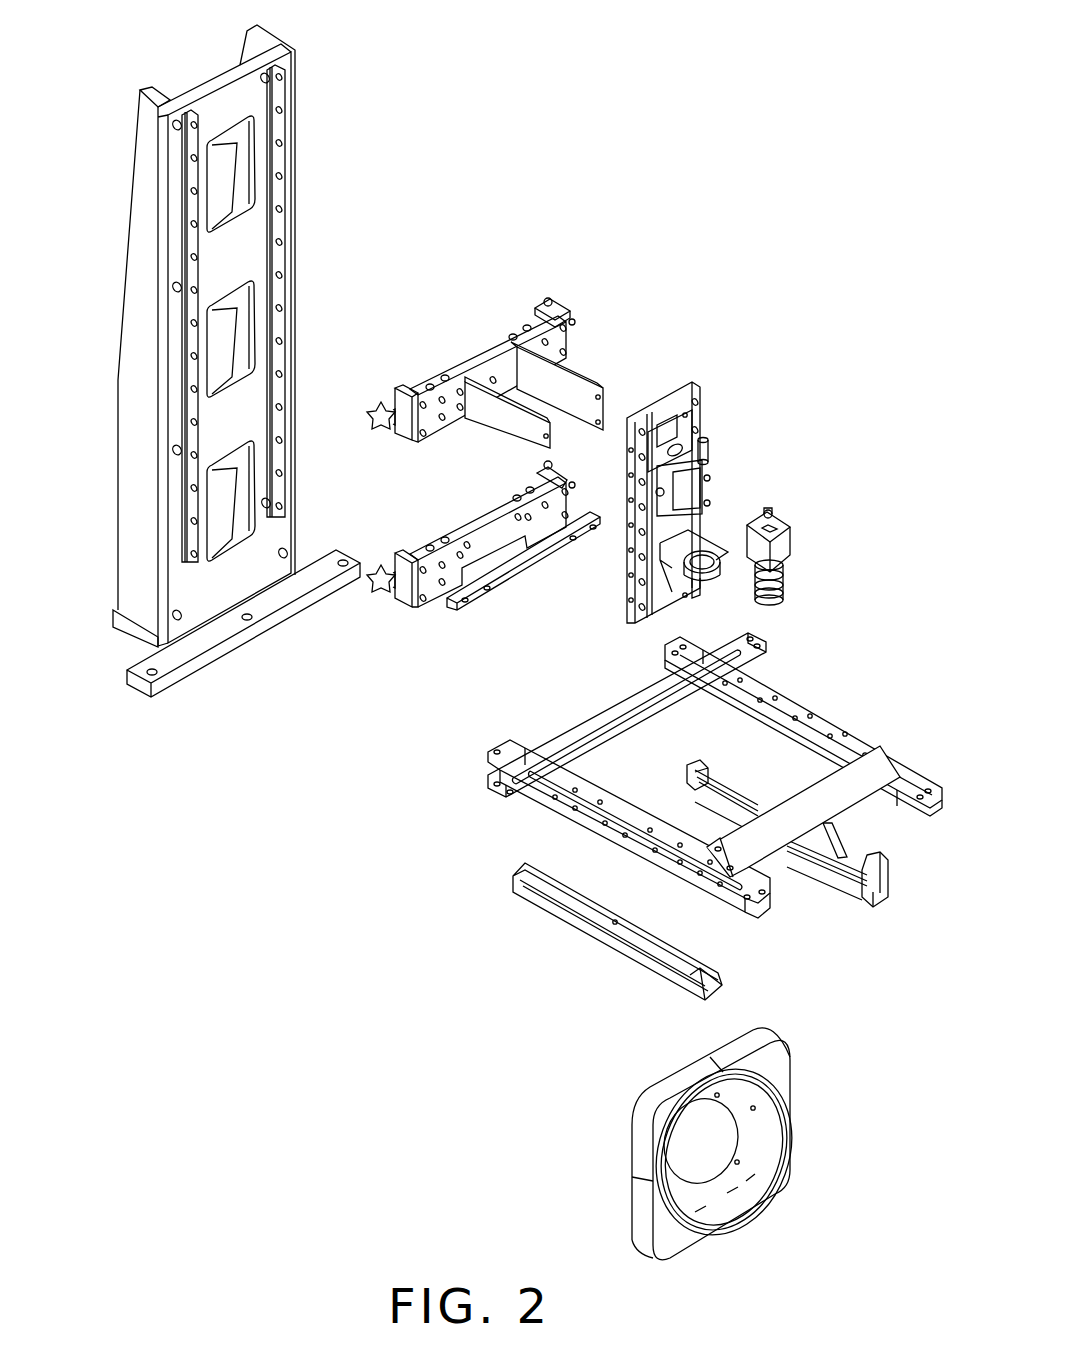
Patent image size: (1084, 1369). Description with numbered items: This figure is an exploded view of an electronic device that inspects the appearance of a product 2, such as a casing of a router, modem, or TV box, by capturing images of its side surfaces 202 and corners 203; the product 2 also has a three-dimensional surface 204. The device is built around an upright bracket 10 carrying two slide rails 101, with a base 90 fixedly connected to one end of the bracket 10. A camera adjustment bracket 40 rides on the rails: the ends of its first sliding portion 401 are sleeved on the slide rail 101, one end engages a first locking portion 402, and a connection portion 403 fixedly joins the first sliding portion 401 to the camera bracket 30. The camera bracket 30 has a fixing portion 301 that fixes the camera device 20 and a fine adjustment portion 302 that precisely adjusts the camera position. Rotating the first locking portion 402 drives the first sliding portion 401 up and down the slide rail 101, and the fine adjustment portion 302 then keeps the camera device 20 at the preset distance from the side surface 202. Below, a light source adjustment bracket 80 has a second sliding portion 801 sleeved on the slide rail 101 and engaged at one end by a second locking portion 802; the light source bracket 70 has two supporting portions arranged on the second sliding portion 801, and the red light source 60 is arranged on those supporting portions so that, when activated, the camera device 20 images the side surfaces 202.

The product 2 is at (797, 1196).
The bracket 10 is at (263, 36).
The slide rail 101 is at (162, 146).
The camera device 20 is at (780, 541).
The camera bracket 30 is at (800, 363).
The fixing portion 301 is at (697, 386).
The fine adjustment portion 302 is at (707, 442).
The camera adjustment bracket 40 is at (735, 345).
The first sliding portion 401 is at (548, 300).
The first locking portion 402 is at (572, 313).
The connection portion 403 is at (573, 366).
The red light source 60 is at (877, 760).
The light source bracket 70 is at (923, 790).
The light source adjustment bracket 80 is at (472, 650).
The second sliding portion 801 is at (430, 589).
The second locking portion 802 is at (372, 590).
The base 90 is at (192, 652).
The side surface 202 is at (673, 1082).
The corner 203 is at (773, 1046).
The 3D surface 204 is at (790, 1160).